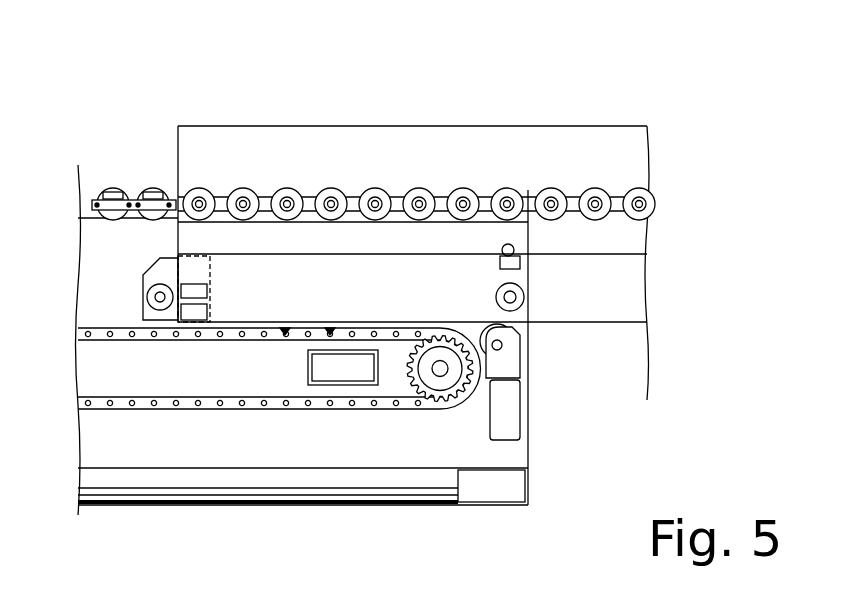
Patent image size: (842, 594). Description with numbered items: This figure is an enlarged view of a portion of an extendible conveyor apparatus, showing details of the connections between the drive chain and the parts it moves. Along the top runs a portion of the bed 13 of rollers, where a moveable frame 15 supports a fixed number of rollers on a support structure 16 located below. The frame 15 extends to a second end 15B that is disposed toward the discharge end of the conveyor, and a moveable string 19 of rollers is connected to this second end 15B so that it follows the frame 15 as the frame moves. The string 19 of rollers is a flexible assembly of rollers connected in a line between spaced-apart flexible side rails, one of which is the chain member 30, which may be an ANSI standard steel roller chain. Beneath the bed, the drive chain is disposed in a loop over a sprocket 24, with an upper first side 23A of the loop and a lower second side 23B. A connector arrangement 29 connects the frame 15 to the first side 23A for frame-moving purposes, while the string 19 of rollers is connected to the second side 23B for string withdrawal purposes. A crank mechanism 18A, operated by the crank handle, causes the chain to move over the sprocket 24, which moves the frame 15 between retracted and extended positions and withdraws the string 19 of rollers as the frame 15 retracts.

The bed of rollers 13 is at (551, 187).
The moveable frame 15 is at (400, 127).
The second end of the frame 15B is at (242, 127).
The string of rollers 19 is at (199, 190).
The chain member 30 is at (132, 215).
The connector arrangement 29 is at (312, 326).
The first side of the loop 23A is at (378, 340).
The second side of the loop 23B is at (265, 407).
The sprocket 24 is at (443, 382).
The crank mechanism 18A is at (512, 360).
The support structure 16 is at (232, 505).